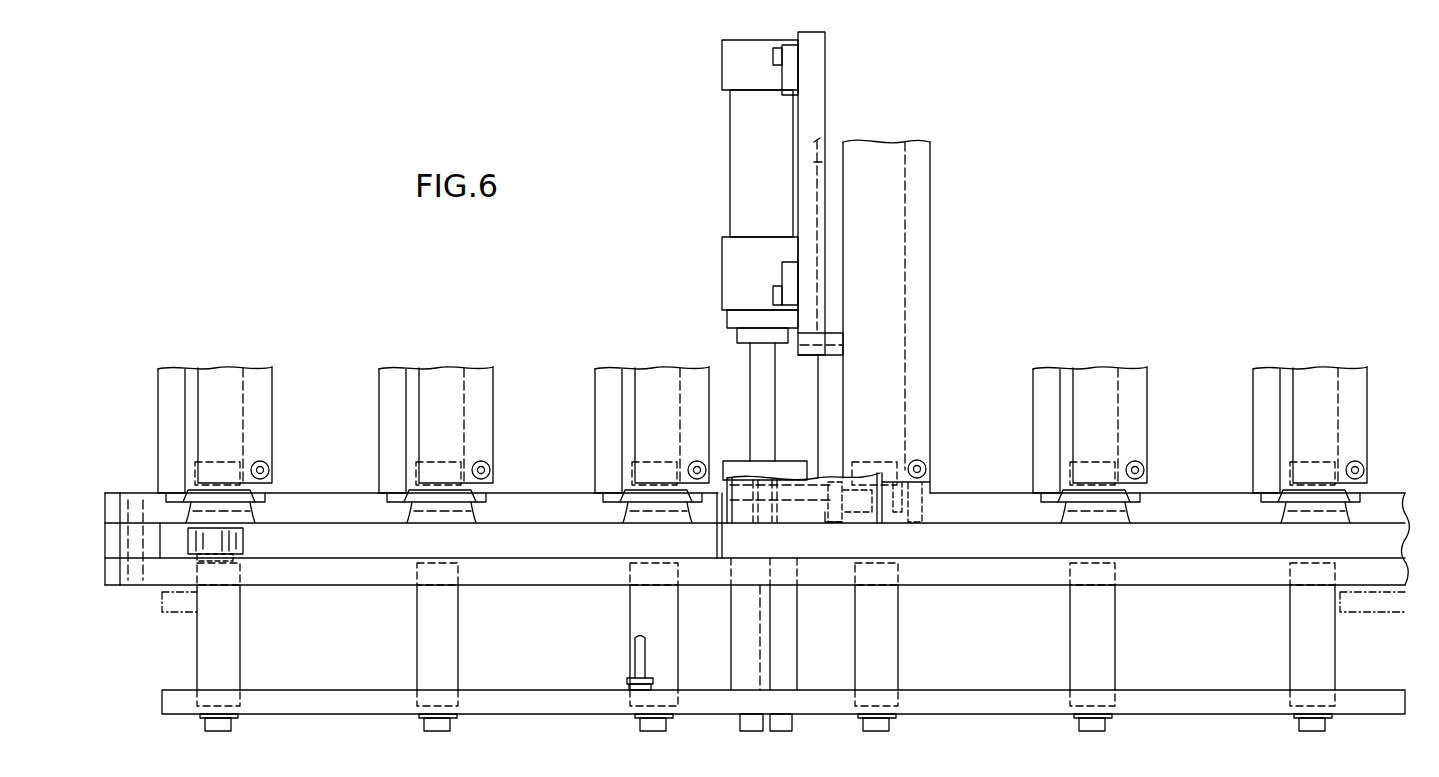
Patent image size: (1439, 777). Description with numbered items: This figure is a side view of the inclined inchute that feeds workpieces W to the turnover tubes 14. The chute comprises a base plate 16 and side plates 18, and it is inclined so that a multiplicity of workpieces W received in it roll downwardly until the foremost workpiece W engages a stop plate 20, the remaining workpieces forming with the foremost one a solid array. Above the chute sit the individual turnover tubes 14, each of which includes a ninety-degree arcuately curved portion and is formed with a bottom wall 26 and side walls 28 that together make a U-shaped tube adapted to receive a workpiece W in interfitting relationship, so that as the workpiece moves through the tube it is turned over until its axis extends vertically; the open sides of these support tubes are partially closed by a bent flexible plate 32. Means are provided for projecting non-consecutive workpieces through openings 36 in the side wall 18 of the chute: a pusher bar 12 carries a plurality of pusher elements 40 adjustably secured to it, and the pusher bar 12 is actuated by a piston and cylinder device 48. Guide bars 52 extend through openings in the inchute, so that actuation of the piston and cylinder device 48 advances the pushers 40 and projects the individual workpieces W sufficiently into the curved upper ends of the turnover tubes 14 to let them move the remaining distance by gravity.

The pusher bar 12 is at (1013, 705).
The turnover tube 14 is at (281, 405).
The base plate 16 is at (1384, 540).
The side plate 18 is at (318, 506).
The stop plate 20 is at (105, 544).
The bottom wall 26 is at (412, 406).
The side wall 28 is at (382, 425).
The bent flexible plate 32 is at (419, 421).
The opening 36 is at (1058, 510).
The pusher element 40 is at (455, 630).
The piston and cylinder device 48 is at (733, 181).
The guide bar 52 is at (727, 673).
The workpiece W is at (246, 539).